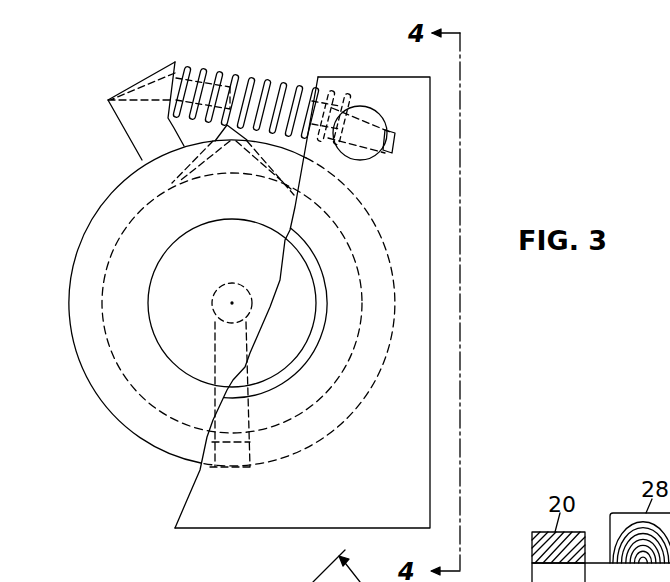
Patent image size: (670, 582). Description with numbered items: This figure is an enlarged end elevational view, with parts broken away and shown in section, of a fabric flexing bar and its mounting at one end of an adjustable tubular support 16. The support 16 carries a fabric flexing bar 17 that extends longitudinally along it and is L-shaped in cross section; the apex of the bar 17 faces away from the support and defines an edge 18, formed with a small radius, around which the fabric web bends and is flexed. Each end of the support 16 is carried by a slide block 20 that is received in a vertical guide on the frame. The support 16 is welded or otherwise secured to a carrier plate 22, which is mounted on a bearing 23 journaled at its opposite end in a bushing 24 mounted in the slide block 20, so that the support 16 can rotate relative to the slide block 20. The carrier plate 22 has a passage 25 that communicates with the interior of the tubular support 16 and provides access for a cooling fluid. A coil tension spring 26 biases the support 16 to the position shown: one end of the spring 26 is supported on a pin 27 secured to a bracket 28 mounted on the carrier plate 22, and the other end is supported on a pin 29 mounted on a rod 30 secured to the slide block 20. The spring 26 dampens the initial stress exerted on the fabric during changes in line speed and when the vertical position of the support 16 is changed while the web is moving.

The adjustable tubular support 16 is at (122, 378).
The fabric flexing bar 17 is at (208, 162).
The edge 18 is at (226, 126).
The slide block 20 is at (208, 520).
The carrier plate 22 is at (93, 218).
The bearing 23 is at (289, 368).
The bushing 24 is at (316, 298).
The passage 25 is at (218, 342).
The coil tension spring 26 is at (260, 80).
The pin 27 is at (236, 82).
The bracket 28 is at (113, 106).
The pin 29 is at (394, 152).
The rod 30 is at (362, 107).